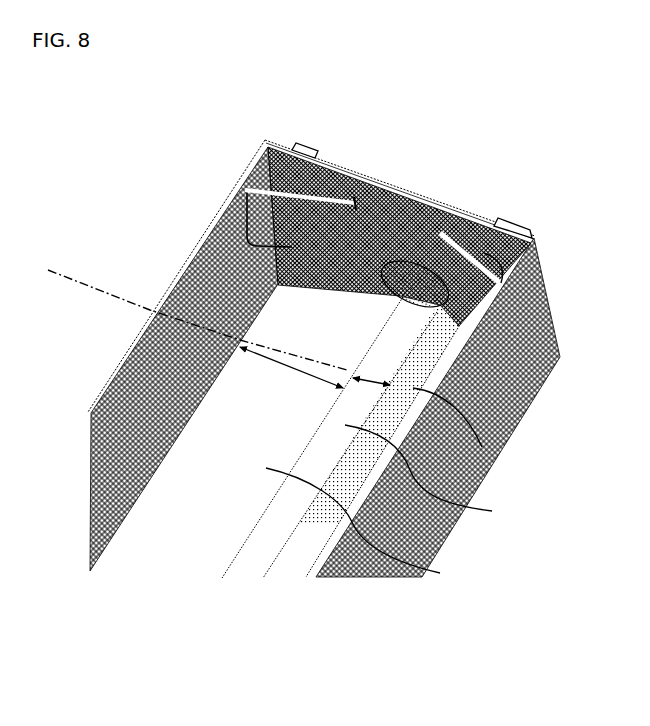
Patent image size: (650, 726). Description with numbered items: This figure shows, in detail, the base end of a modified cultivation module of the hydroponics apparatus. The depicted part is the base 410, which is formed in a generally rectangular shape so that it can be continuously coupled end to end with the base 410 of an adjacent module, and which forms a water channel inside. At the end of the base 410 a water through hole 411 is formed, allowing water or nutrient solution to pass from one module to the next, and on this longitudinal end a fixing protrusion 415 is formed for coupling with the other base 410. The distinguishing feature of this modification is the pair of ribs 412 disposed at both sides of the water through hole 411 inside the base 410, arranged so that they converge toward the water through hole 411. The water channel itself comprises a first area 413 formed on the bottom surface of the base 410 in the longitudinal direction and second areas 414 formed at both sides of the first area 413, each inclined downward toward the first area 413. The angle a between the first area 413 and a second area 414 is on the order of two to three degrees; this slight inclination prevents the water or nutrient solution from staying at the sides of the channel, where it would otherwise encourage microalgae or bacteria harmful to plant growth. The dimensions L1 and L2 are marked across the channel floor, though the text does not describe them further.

The base 410 is at (366, 90).
The water through hole 411 is at (412, 259).
The rib 412 is at (243, 191).
The first area 413 is at (492, 511).
The second area 414 is at (482, 447).
The fixing protrusion 415 is at (515, 225).
The angle a is at (80, 284).
The width L1 is at (371, 370).
The width L2 is at (291, 371).